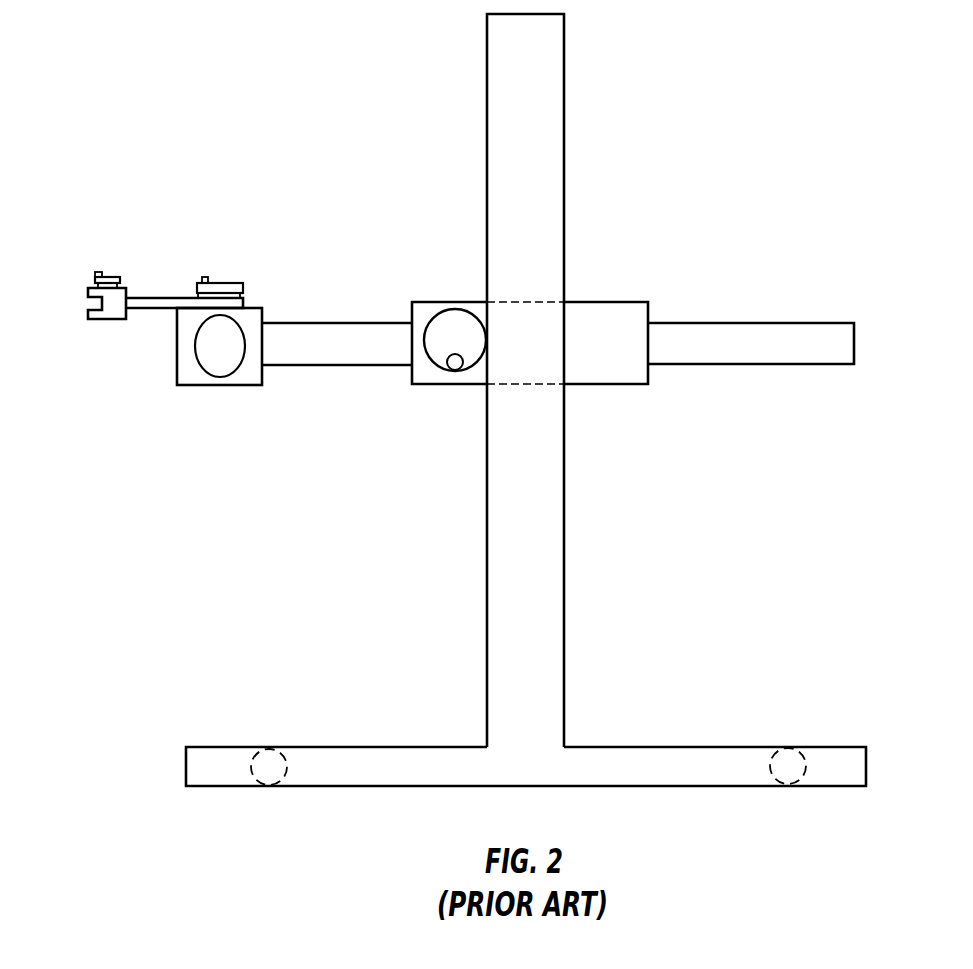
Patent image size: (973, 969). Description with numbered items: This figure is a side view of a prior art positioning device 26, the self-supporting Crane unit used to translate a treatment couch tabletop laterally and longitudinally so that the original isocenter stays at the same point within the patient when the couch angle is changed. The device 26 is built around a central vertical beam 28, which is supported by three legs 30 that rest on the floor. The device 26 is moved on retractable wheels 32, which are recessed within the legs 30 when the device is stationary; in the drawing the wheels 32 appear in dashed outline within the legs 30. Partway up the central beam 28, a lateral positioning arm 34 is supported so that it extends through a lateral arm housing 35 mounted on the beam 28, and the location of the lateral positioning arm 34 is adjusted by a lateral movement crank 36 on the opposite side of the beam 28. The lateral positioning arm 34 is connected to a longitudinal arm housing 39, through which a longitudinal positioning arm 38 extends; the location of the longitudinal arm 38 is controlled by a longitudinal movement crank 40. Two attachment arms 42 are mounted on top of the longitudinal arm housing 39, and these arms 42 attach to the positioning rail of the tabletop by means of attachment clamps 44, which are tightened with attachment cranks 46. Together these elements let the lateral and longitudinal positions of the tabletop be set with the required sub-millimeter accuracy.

The positioning device 26 is at (882, 102).
The central vertical beam 28 is at (567, 110).
The legs 30 is at (407, 747).
The retractable wheels 32 is at (265, 758).
The lateral positioning arm 34 is at (802, 323).
The lateral arm housing 35 is at (617, 302).
The lateral movement crank 36 is at (443, 312).
The longitudinal positioning arm 38 is at (234, 362).
The longitudinal arm housing 39 is at (253, 308).
The longitudinal movement crank 40 is at (227, 283).
The attachment arms 42 is at (160, 298).
The attachment clamps 44 is at (108, 303).
The attachment cranks 46 is at (98, 275).